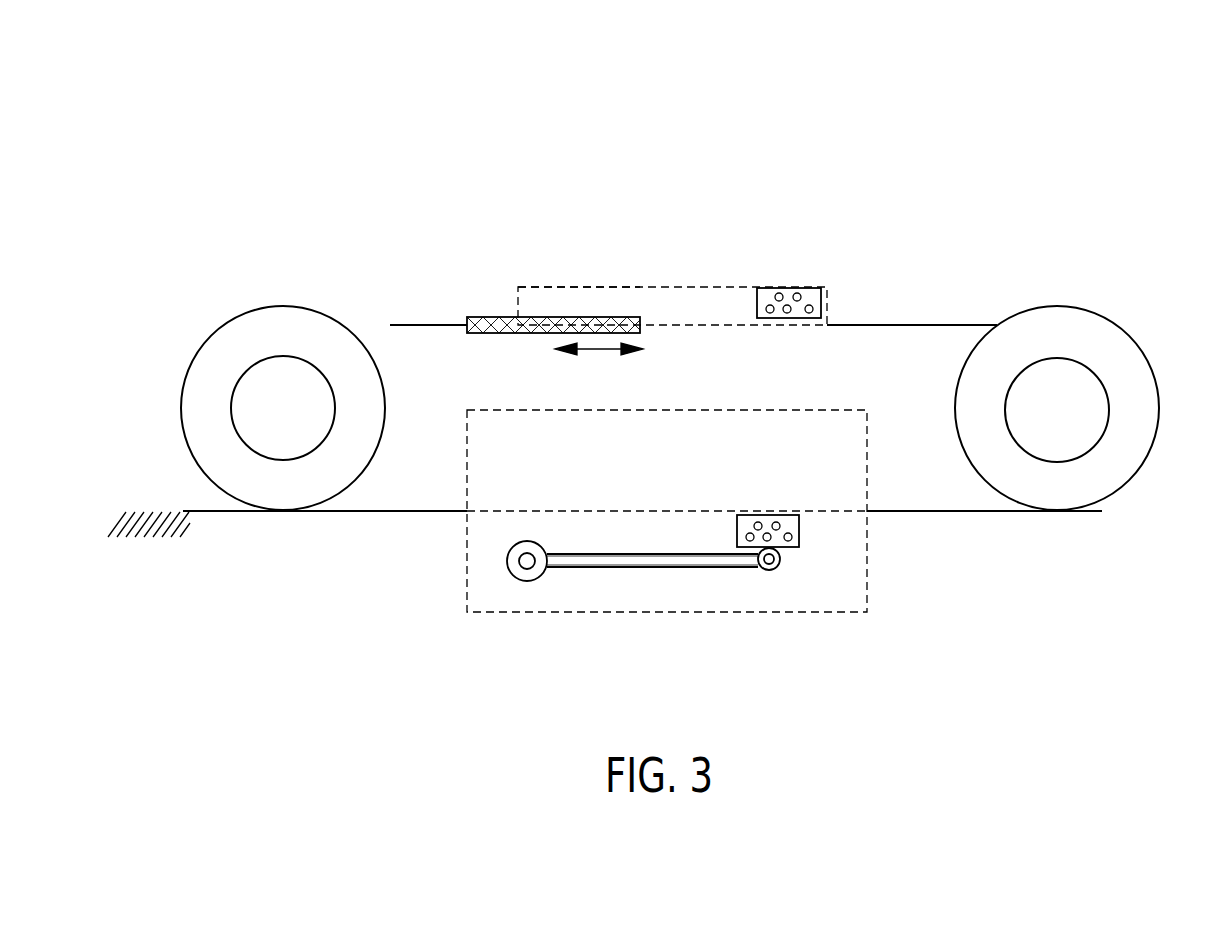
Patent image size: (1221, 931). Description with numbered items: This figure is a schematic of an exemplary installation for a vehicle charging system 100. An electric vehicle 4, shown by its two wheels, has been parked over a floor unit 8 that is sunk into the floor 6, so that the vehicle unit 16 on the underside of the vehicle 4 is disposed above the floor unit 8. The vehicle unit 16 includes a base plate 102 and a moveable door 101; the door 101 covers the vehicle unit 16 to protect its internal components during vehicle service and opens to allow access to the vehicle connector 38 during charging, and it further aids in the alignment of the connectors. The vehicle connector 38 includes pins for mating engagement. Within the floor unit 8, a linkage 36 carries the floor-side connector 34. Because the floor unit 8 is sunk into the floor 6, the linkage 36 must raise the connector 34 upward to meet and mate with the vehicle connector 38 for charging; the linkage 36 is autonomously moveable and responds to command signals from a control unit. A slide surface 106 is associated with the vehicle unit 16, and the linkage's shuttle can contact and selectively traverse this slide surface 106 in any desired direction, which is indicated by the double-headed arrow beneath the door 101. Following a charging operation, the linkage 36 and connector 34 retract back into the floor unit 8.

The charging system 100 is at (1123, 162).
The moveable door 101 is at (498, 318).
The base plate 102 is at (728, 286).
The slide surface 106 is at (670, 289).
The vehicle unit 16 is at (550, 300).
The vehicle connector 38 is at (808, 296).
The vehicle 4 is at (1110, 338).
The floor 6 is at (888, 510).
The floor unit 8 is at (465, 610).
The connector 34 is at (802, 522).
The linkage 36 is at (665, 563).